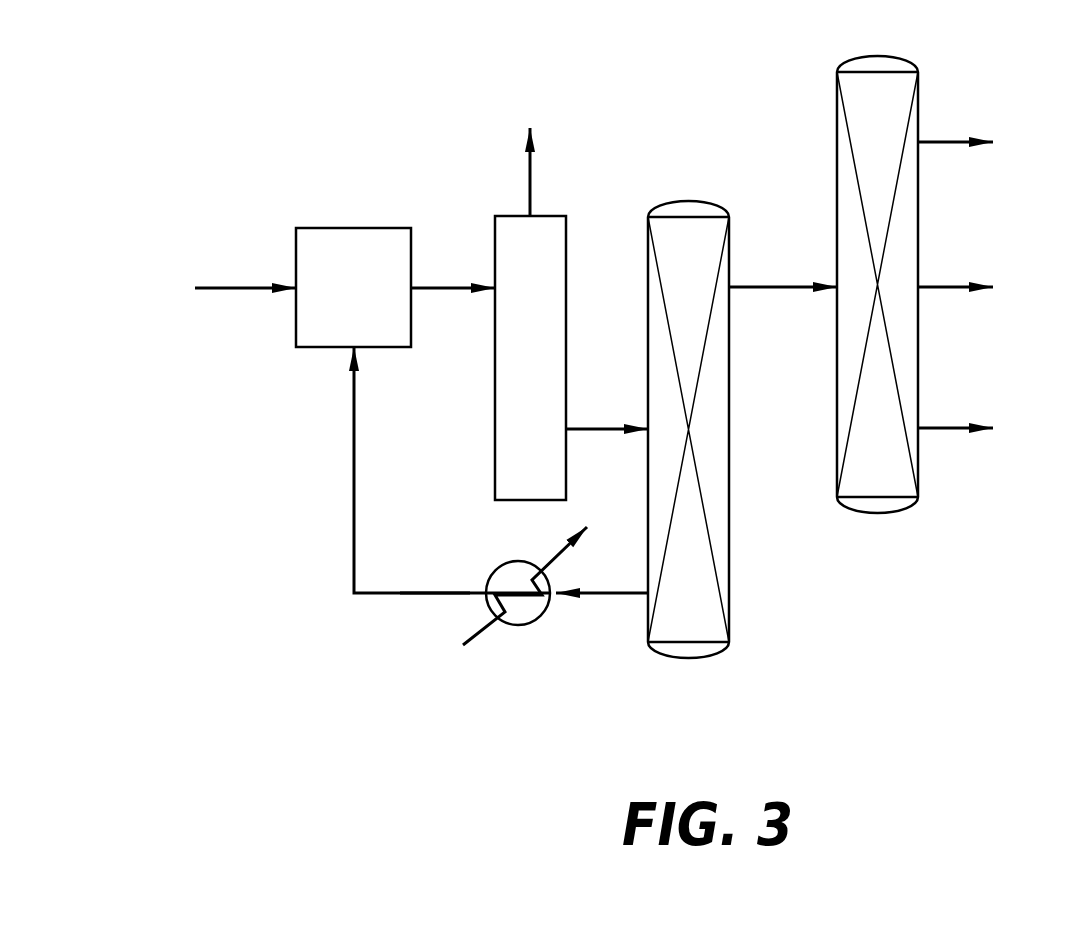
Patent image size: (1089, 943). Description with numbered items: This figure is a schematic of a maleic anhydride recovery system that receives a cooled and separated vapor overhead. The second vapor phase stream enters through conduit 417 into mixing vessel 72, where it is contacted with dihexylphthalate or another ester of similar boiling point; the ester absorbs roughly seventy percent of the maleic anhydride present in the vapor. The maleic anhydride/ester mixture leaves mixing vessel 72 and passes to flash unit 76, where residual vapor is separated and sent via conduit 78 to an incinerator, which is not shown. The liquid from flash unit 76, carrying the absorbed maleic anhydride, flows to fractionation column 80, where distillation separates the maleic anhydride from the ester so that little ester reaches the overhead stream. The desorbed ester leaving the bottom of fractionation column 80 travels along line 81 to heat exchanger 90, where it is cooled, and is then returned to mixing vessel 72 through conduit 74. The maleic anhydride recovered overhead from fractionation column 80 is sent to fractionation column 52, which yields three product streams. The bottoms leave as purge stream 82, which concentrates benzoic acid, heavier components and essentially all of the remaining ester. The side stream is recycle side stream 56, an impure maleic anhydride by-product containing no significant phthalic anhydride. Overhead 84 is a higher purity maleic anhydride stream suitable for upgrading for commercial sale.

The conduit 417 is at (235, 288).
The mixing vessel 72 is at (352, 228).
The conduit 74 is at (354, 455).
The flash unit 76 is at (556, 216).
The conduit 78 is at (530, 172).
The fractionation column 80 is at (648, 362).
The recycle conduit 81 is at (420, 593).
The purge stream 82 is at (943, 428).
The overhead 84 is at (958, 142).
The recycle side stream 56 is at (945, 287).
The fractionation column 52 is at (903, 56).
The heat exchanger 90 is at (518, 561).